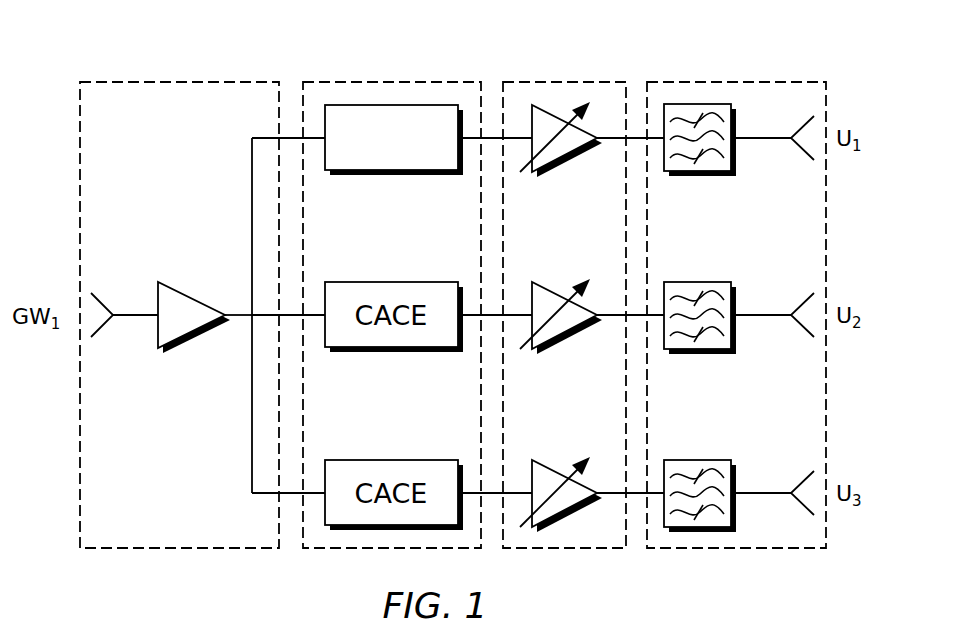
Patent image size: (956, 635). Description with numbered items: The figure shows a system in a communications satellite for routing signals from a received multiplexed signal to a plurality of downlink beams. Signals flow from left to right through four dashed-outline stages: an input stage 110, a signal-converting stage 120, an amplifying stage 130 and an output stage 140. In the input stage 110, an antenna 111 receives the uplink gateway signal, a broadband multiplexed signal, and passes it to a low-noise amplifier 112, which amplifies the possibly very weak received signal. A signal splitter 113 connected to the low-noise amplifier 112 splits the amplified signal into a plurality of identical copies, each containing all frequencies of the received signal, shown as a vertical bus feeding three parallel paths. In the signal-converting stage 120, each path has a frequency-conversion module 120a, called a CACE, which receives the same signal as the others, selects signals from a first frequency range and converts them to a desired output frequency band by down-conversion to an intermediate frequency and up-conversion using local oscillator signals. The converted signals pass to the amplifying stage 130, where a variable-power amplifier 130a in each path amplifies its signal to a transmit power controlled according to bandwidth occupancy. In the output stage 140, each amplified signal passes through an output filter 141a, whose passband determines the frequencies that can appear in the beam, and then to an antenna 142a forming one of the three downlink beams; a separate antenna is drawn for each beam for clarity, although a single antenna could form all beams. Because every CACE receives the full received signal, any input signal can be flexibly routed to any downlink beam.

The input stage 110 is at (190, 82).
The antenna 111 is at (112, 310).
The low-noise amplifier 112 is at (196, 298).
The signal splitter 113 is at (252, 150).
The signal-converting stage 120 is at (340, 82).
The frequency-conversion module 120a is at (401, 176).
The amplifying stage 130 is at (560, 82).
The variable-power amplifier 130a is at (572, 164).
The output stage 140 is at (706, 82).
The output filter 141a is at (711, 178).
The antenna 142a is at (802, 152).